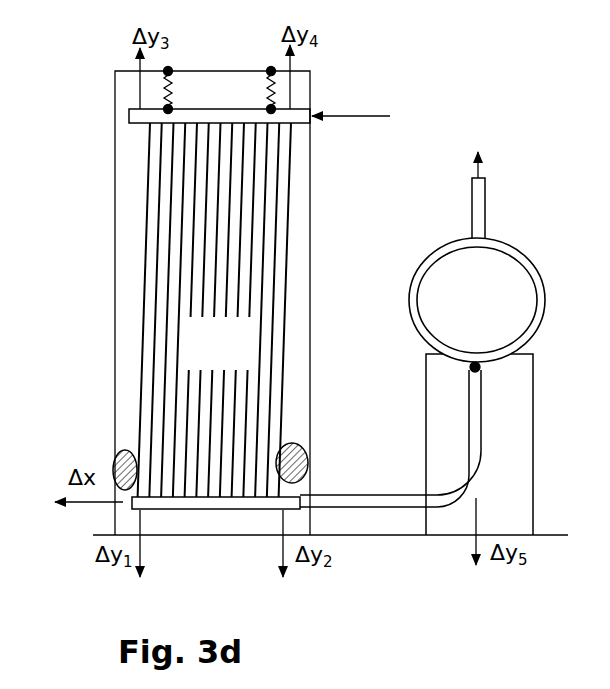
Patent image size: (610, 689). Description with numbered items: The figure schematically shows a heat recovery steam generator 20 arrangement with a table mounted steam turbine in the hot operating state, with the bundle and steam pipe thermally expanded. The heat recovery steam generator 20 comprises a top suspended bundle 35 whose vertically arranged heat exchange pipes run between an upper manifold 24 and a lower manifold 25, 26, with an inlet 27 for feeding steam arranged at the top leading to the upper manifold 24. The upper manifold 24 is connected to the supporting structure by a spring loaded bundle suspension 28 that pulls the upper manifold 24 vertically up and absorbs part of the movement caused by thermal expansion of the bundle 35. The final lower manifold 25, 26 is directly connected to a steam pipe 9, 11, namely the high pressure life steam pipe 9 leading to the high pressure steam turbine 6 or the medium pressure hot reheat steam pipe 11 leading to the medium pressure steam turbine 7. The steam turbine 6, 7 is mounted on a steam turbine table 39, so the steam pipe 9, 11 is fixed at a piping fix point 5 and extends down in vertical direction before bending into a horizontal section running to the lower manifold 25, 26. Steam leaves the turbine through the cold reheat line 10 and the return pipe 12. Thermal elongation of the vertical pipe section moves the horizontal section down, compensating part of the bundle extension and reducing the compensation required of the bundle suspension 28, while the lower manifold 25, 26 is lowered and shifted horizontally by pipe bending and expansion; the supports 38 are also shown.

The piping fix point 5 is at (478, 370).
The high pressure steam turbine 6 is at (477, 300).
The medium pressure steam turbine 7 is at (477, 300).
The high pressure life steam pipe 9 is at (390, 470).
The cold reheat line 10 is at (521, 194).
The medium pressure hot reheat steam pipe 11 is at (368, 507).
The return pipe 12 is at (521, 194).
The heat recovery steam generator 20 is at (240, 361).
The upper manifold 24 is at (293, 110).
The lower manifold for high pressure steam 25 is at (216, 547).
The lower manifold for medium pressure steam 26 is at (233, 511).
The inlet 27 is at (351, 103).
The bundle suspension 28 is at (265, 82).
The top suspended bundle 35 is at (272, 268).
The elastic supports / bearings 38 is at (122, 452).
The steam turbine table 39 is at (533, 395).